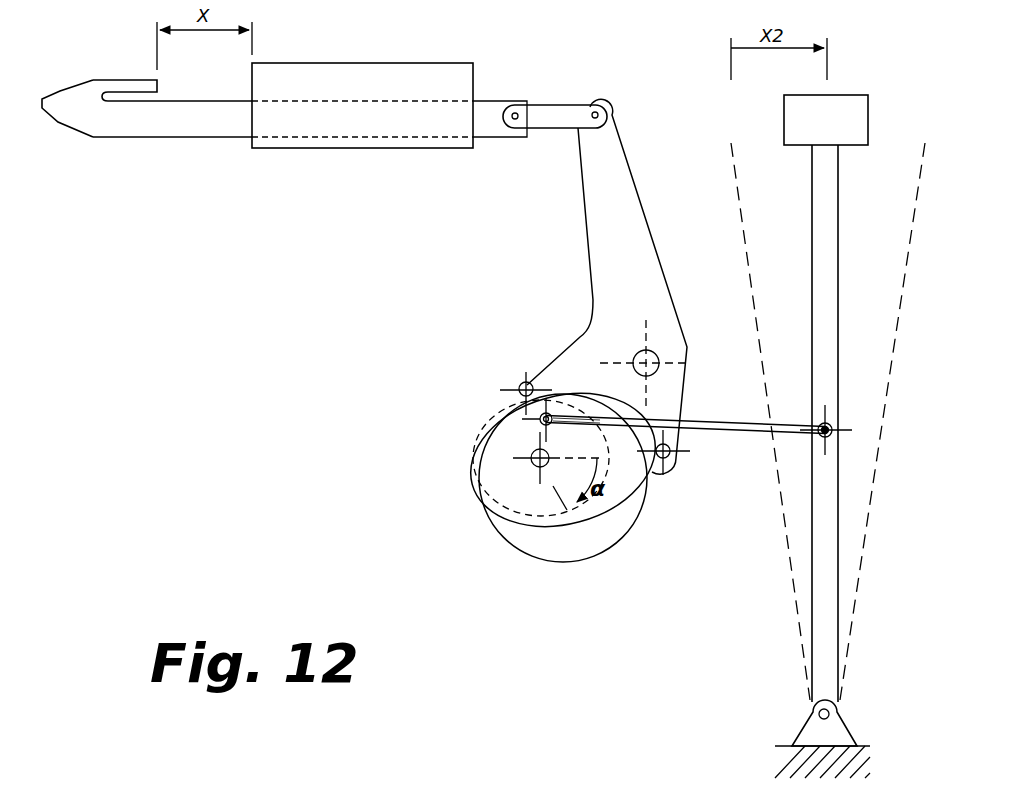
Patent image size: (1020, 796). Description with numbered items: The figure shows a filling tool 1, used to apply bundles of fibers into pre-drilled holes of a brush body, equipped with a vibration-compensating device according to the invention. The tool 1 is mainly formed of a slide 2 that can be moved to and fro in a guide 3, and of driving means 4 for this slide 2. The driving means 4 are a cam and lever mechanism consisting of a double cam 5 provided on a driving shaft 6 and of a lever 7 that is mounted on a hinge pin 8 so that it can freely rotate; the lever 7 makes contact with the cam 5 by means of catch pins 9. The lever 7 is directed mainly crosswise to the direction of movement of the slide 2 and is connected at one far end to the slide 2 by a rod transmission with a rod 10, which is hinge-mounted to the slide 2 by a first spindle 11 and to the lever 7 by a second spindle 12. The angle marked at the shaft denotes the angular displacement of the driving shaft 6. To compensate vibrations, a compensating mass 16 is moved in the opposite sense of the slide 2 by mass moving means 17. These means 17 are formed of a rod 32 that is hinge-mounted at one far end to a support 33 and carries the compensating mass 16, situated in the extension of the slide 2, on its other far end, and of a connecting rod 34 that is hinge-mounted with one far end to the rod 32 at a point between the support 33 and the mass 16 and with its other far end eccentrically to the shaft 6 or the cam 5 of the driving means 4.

The tool 1 is at (557, 44).
The slide 2 is at (80, 105).
The guide 3 is at (330, 148).
The driving means 4 is at (488, 251).
The cam 5 is at (566, 558).
The driving shaft 6 is at (526, 466).
The lever 7 is at (603, 232).
The hinge pin 8 is at (634, 353).
The catch pins 9 is at (516, 387).
The rod 10 is at (553, 121).
The first spindle 11 is at (514, 122).
The second spindle 12 is at (593, 108).
The compensating mass 16 is at (845, 108).
The mass moving means 17 is at (618, 658).
The rod 32 is at (822, 557).
The support 33 is at (805, 735).
The connecting rod 34 is at (723, 428).